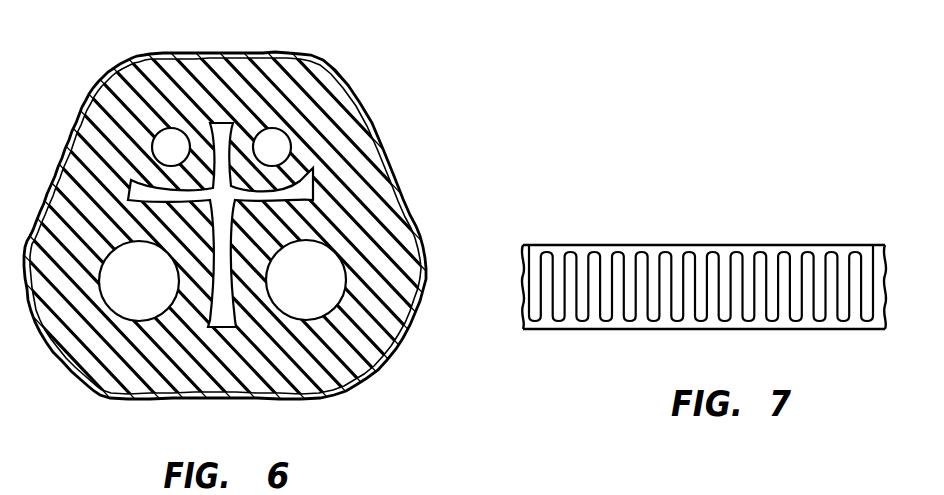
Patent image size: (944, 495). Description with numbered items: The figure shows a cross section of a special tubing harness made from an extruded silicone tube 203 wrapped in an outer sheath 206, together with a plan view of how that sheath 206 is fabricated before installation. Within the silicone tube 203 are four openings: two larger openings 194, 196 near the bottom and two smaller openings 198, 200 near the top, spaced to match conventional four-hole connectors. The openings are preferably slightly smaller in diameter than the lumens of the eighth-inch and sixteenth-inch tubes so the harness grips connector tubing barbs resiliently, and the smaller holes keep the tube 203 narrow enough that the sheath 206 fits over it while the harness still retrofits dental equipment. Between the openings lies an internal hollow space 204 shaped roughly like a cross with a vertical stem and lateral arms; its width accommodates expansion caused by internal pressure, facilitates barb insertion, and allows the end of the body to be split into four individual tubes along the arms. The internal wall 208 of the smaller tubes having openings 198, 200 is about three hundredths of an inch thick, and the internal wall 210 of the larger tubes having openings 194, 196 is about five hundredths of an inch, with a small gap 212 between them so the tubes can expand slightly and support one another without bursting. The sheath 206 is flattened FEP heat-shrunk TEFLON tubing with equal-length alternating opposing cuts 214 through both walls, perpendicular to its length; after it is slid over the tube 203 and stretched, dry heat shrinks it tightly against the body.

In FIG. 6, the opening 194 is at (135, 300).
In FIG. 6, the opening 196 is at (307, 295).
In FIG. 6, the opening 198 is at (172, 143).
In FIG. 6, the opening 200 is at (272, 145).
In FIG. 6, the silicone tube 203 is at (234, 393).
In FIG. 6, the internal hollow space 204 is at (250, 142).
In FIG. 6, the outer sheath 206 is at (373, 124).
In FIG. 7, the outer sheath 206 is at (617, 245).
In FIG. 6, the internal wall 208 is at (312, 169).
In FIG. 6, the internal wall 210 is at (309, 229).
In FIG. 6, the gap region 212 is at (305, 197).
In FIG. 7, the alternating opposing cuts 214 is at (797, 252).